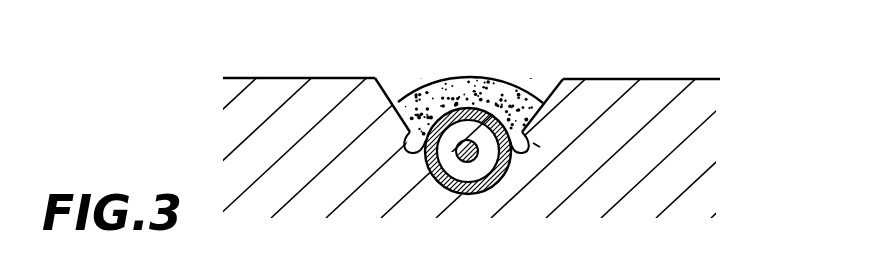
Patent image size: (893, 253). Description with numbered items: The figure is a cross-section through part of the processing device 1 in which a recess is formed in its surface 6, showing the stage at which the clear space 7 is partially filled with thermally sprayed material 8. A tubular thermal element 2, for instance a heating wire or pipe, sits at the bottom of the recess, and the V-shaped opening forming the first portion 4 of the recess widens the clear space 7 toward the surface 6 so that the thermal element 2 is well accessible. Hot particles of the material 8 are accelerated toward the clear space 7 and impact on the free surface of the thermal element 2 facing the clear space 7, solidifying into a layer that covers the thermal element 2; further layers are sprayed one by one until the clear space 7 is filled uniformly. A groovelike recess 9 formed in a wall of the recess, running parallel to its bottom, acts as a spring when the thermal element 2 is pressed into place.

The processing device 1 is at (592, 92).
The thermal element 2 is at (427, 165).
The first portion 4 is at (389, 91).
The surface 6 is at (300, 77).
The clear space 7 is at (538, 81).
The material 8 is at (499, 87).
The groovelike recess 9 is at (533, 143).